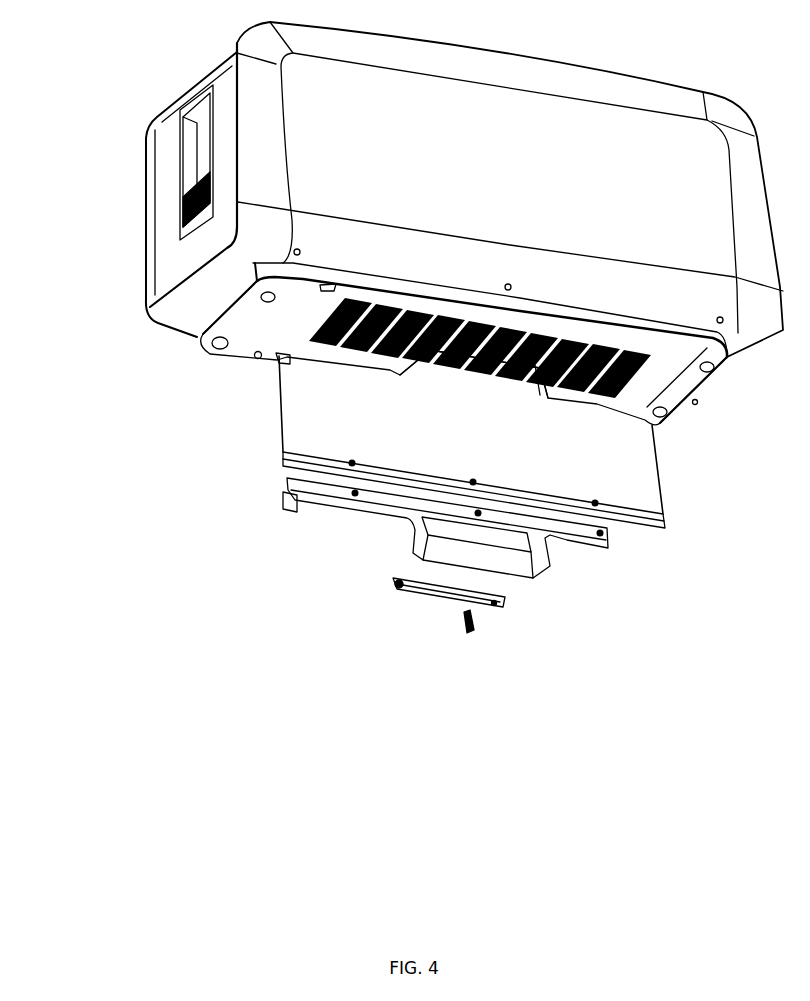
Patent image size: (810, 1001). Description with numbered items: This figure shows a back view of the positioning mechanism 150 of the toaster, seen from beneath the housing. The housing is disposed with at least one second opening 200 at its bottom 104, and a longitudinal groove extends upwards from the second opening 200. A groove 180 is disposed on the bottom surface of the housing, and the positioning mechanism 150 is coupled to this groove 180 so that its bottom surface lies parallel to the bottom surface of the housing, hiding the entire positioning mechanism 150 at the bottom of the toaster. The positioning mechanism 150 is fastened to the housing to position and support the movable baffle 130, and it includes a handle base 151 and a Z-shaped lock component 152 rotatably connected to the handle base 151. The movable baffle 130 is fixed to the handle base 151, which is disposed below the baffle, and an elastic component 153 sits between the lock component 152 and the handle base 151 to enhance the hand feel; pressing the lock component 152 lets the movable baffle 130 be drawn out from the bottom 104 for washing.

The bottom 104 is at (290, 312).
The second opening 200 is at (278, 358).
The groove 180 is at (500, 377).
The movable baffle 130 is at (313, 392).
The positioning mechanism 150 is at (457, 615).
The handle base 151 is at (580, 536).
The lock component 152 is at (495, 606).
The elastic component 153 is at (408, 662).